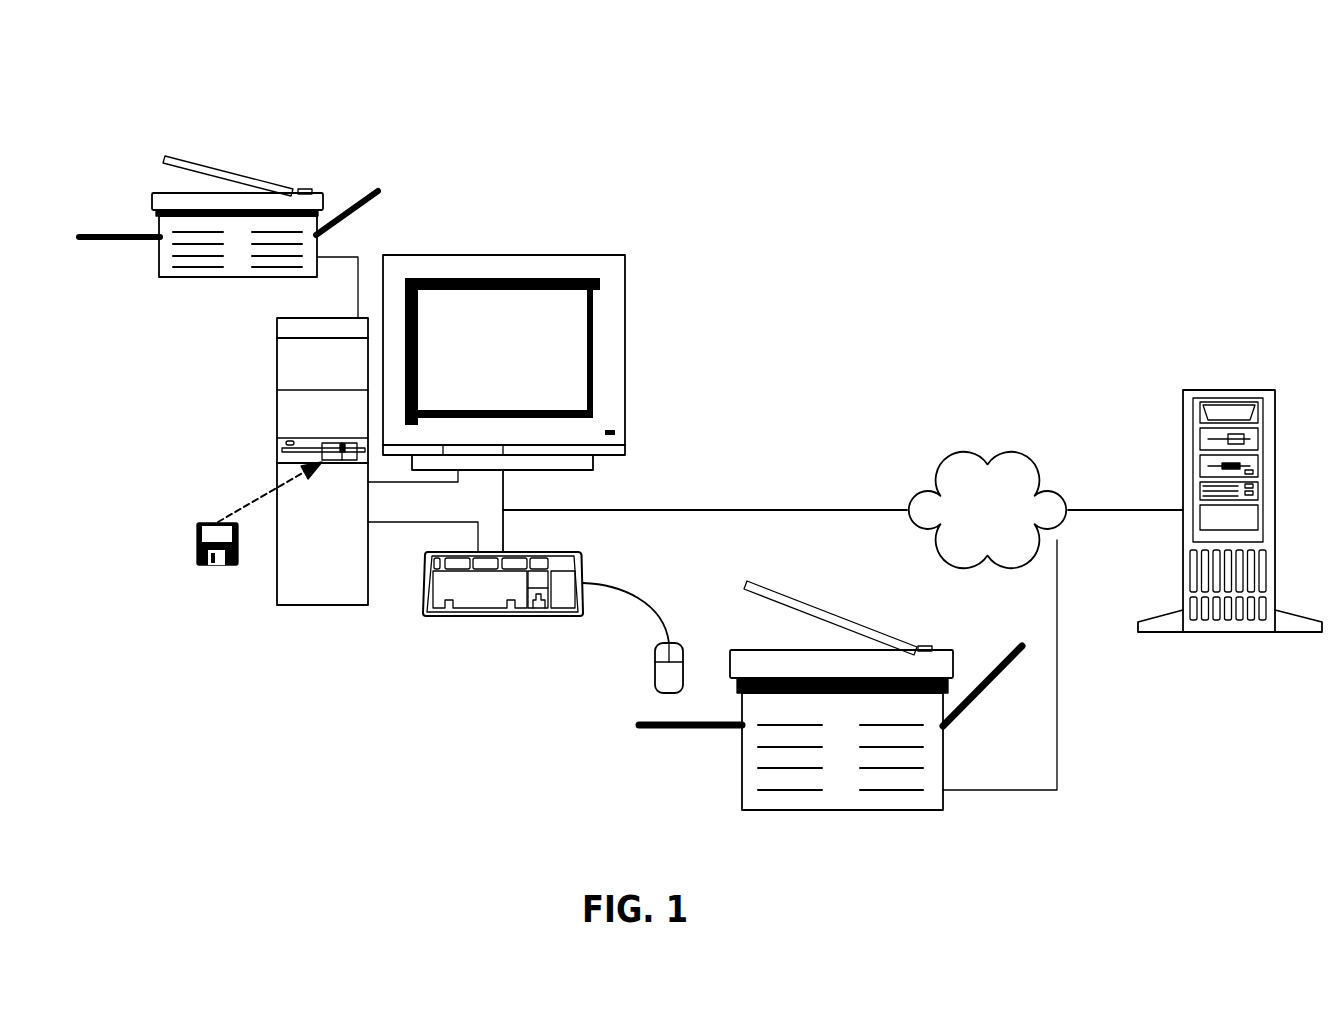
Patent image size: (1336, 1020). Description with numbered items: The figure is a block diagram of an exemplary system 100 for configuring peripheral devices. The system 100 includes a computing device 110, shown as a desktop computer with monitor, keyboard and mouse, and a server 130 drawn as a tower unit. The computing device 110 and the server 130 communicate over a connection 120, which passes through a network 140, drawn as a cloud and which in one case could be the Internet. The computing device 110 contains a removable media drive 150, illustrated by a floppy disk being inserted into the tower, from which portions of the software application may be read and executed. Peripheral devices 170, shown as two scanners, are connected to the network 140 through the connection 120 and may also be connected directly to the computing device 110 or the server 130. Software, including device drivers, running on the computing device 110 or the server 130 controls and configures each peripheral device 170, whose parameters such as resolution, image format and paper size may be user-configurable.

The system 100 is at (335, 61).
The computing device 110 is at (504, 378).
The connection 120 is at (705, 495).
The server 130 is at (1230, 482).
The network 140 is at (966, 524).
The removable media drive 150 is at (259, 532).
The peripheral device 170 is at (568, 483).